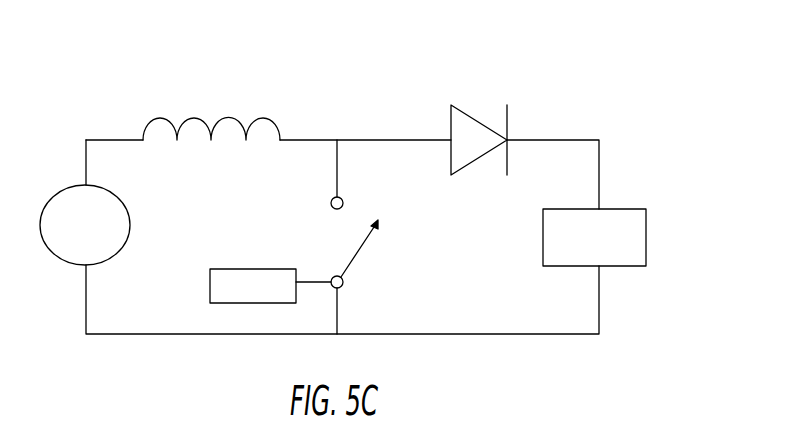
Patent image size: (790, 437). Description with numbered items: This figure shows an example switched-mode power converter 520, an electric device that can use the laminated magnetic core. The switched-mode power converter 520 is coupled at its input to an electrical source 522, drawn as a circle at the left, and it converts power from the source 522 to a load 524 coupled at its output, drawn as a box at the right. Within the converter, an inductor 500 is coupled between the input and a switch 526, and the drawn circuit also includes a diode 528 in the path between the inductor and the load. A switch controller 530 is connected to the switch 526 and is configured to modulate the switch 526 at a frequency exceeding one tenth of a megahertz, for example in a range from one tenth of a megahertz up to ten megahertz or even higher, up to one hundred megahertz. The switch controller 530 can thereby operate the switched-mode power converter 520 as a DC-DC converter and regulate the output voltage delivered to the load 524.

The switched-mode power converter 520 is at (131, 61).
The inductor 500 is at (267, 117).
The electrical source 522 is at (128, 207).
The load 524 is at (646, 228).
The switch 526 is at (375, 253).
The diode 528 is at (451, 122).
The switch controller 530 is at (240, 269).